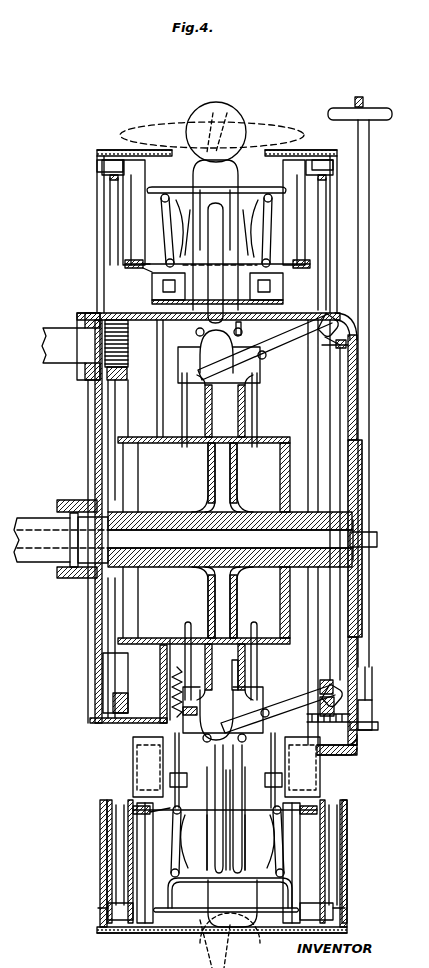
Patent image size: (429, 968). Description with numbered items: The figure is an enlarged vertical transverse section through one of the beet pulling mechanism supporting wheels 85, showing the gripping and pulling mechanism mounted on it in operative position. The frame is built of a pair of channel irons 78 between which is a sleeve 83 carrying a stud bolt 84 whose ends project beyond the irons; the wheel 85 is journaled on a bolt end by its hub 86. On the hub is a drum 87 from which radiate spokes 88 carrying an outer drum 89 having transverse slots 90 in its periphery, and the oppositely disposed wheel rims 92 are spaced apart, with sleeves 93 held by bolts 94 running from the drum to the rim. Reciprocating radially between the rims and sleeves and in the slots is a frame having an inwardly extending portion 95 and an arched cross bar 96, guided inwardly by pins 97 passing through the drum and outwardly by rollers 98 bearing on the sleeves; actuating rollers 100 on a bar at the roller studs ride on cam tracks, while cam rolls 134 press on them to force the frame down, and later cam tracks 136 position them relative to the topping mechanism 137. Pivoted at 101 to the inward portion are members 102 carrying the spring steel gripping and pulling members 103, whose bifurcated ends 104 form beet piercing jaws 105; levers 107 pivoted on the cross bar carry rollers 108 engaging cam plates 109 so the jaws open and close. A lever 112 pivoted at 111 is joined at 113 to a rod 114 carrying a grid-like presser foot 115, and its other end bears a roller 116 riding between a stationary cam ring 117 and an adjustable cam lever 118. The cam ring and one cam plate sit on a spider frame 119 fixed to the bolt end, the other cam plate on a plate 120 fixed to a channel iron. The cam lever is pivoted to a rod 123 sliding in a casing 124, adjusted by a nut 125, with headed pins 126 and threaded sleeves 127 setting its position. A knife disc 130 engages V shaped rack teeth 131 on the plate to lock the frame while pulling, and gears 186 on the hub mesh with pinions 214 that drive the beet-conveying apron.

The channel irons 78 is at (78, 505).
The sleeve 83 is at (32, 518).
The stud bolt 84 is at (148, 540).
The beet pulling mechanism supporting wheel 85 is at (86, 188).
The hub 86 is at (165, 567).
The drum 87 is at (158, 443).
The spokes 88 is at (223, 400).
The drum 89 is at (125, 264).
The transverse slots 90 is at (152, 270).
The wheel rims 92 is at (112, 150).
The sleeves 93 is at (137, 228).
The bolts 94 is at (253, 250).
The inwardly extending portion 95 is at (245, 745).
The arched cross bar 96 is at (258, 878).
The pins 97 is at (189, 622).
The rollers 98 is at (140, 160).
The actuating rollers 100 is at (97, 163).
The pivot 101 is at (199, 336).
The oppositely disposed members 102 is at (185, 787).
The gripping and pulling members 103 is at (222, 535).
The bifurcated ends 104 is at (226, 895).
The beet piercing jaws 105 is at (222, 120).
The levers 107 is at (226, 534).
The rollers 108 is at (283, 290).
The cam plates 109 is at (84, 771).
The pivot 111 is at (233, 690).
The lever 112 is at (280, 360).
The pivot 113 is at (210, 375).
The rod 114 is at (178, 372).
The presser foot 115 is at (225, 188).
The roller 116 is at (320, 325).
The cam ring 117 is at (314, 347).
The cam lever 118 is at (336, 706).
The spider frame 119 is at (358, 420).
The plate 120 is at (100, 614).
The rod 123 is at (373, 712).
The casing 124 is at (362, 598).
The adjusting nut 125 is at (370, 128).
The headed pins 126 is at (378, 727).
The exteriorly threaded sleeves 127 is at (358, 748).
The knife disc 130 is at (195, 716).
The V shaped rack teeth 131 is at (172, 680).
The cam rolls 134 is at (120, 887).
The cam tracks 136 is at (112, 178).
The topping mechanism 137 is at (282, 123).
The gears 186 is at (110, 378).
The pinions 214 is at (108, 316).